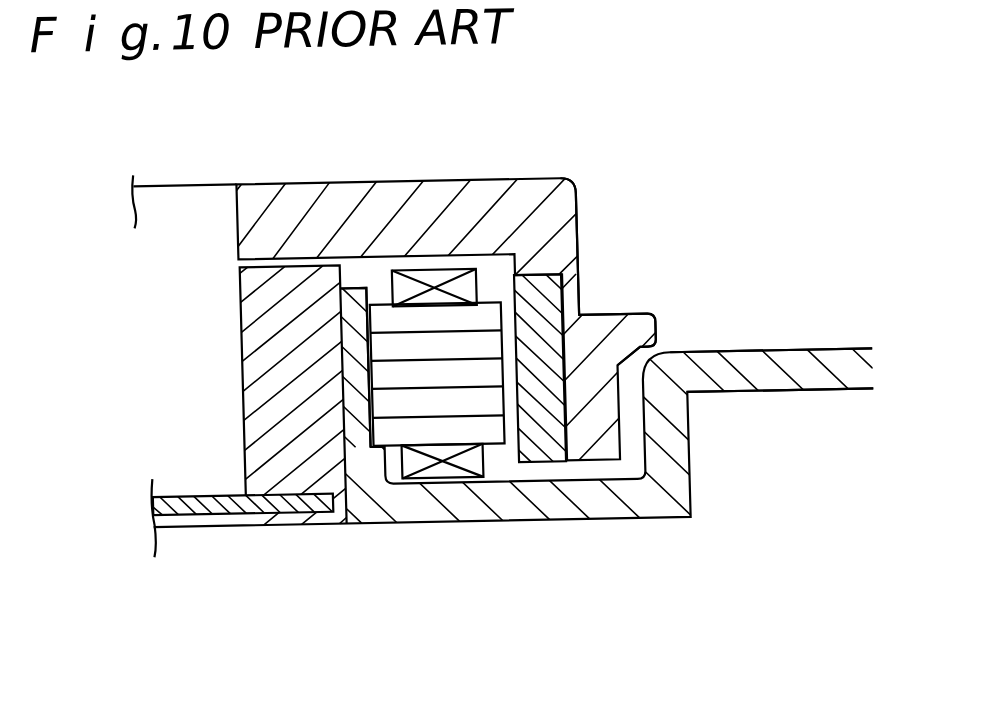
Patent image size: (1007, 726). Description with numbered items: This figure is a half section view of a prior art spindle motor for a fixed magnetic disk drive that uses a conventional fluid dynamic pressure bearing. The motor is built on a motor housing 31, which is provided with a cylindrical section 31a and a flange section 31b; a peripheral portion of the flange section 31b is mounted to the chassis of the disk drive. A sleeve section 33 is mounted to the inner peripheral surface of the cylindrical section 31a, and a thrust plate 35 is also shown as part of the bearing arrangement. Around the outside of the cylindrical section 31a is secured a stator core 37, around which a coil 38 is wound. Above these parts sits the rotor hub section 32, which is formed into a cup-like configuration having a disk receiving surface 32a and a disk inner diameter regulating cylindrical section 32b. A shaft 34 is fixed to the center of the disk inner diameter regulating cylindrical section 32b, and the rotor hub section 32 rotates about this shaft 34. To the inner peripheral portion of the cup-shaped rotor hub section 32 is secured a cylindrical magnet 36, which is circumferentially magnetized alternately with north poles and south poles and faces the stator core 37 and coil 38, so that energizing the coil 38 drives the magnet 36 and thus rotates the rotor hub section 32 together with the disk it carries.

The motor housing 31 is at (526, 507).
The cylindrical section 31a is at (356, 364).
The flange section 31b is at (768, 384).
The rotor hub section 32 is at (485, 247).
The disk receiving surface 32a is at (608, 317).
The disk inner diameter regulating cylindrical section 32b is at (581, 230).
The sleeve section 33 is at (284, 455).
The shaft 34 is at (204, 200).
The thrust plate 35 is at (200, 500).
The magnet 36 is at (550, 443).
The stator core 37 is at (427, 414).
The coil 38 is at (455, 458).